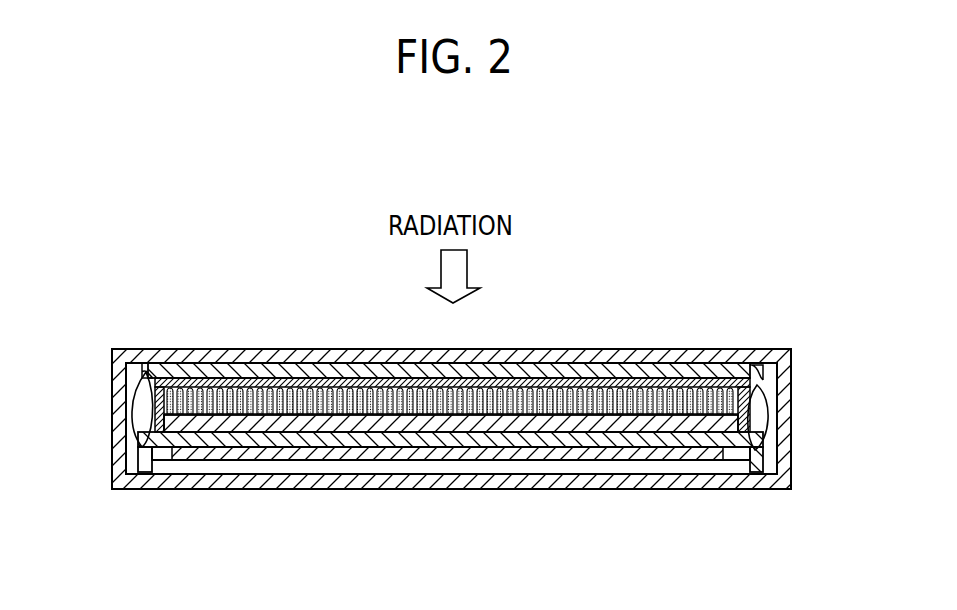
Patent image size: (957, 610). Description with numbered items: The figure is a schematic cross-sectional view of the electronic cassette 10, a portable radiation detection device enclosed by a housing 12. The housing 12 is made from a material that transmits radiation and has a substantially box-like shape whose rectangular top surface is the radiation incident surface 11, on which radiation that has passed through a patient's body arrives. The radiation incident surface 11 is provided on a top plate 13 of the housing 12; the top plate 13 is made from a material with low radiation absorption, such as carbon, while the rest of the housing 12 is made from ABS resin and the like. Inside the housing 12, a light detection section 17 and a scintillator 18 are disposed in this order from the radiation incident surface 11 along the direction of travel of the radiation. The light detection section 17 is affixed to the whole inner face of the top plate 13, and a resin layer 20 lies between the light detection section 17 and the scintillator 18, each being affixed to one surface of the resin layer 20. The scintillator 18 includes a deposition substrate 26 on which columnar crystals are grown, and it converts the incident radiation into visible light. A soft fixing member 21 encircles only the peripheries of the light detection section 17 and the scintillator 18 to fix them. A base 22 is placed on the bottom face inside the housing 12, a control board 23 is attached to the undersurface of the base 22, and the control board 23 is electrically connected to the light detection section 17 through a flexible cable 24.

The electronic cassette 10 is at (645, 340).
The radiation incident surface 11 is at (521, 361).
The housing 12 is at (140, 496).
The top plate 13 is at (563, 363).
The light detection section 17 is at (246, 380).
The scintillator 18 is at (633, 416).
The resin layer 20 is at (717, 382).
The soft fixing member 21 is at (147, 378).
The base 22 is at (317, 442).
The control board 23 is at (247, 461).
The flexible cable 24 is at (128, 408).
The deposition substrate 26 is at (433, 456).